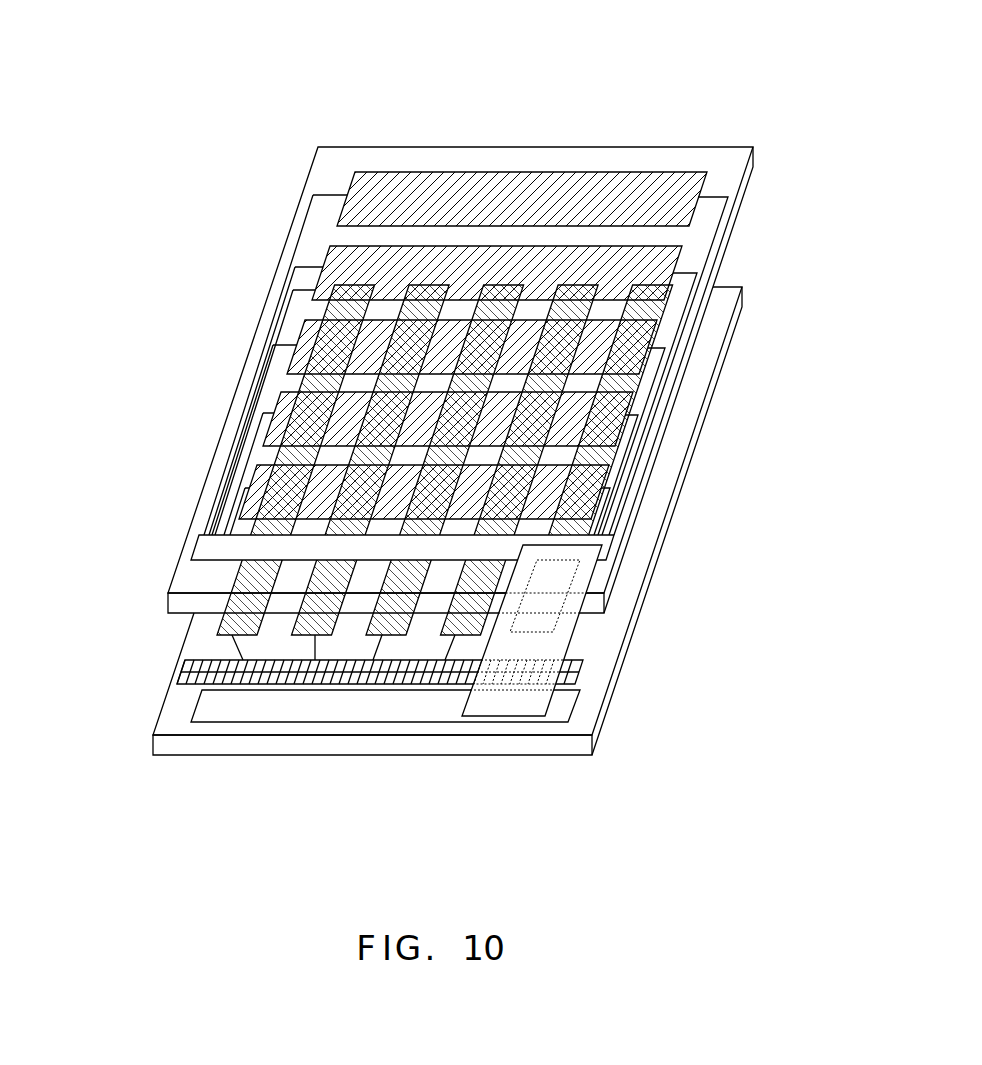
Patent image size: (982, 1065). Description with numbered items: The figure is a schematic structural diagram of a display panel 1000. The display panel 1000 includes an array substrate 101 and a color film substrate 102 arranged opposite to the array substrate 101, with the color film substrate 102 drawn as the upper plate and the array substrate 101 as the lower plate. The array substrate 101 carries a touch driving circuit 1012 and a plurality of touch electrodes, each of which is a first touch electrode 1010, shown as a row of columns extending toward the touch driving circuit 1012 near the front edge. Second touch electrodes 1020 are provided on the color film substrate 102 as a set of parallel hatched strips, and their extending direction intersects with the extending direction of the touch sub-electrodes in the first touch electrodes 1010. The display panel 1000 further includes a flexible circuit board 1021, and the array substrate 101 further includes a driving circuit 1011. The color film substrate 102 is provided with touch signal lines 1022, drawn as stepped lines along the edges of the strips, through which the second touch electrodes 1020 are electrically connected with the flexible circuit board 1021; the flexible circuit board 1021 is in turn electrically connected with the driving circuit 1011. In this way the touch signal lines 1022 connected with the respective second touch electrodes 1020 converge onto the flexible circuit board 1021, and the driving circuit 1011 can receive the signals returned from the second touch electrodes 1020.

The display panel 1000 is at (797, 39).
The array substrate 101 is at (697, 398).
The color film substrate 102 is at (738, 175).
The first touch electrode 1010 is at (212, 629).
The driving circuit 1011 is at (210, 705).
The touch driving circuit 1012 is at (180, 686).
The second touch electrodes 1020 is at (579, 172).
The flexible circuit board 1021 is at (537, 698).
The touch signal lines 1022 is at (237, 423).